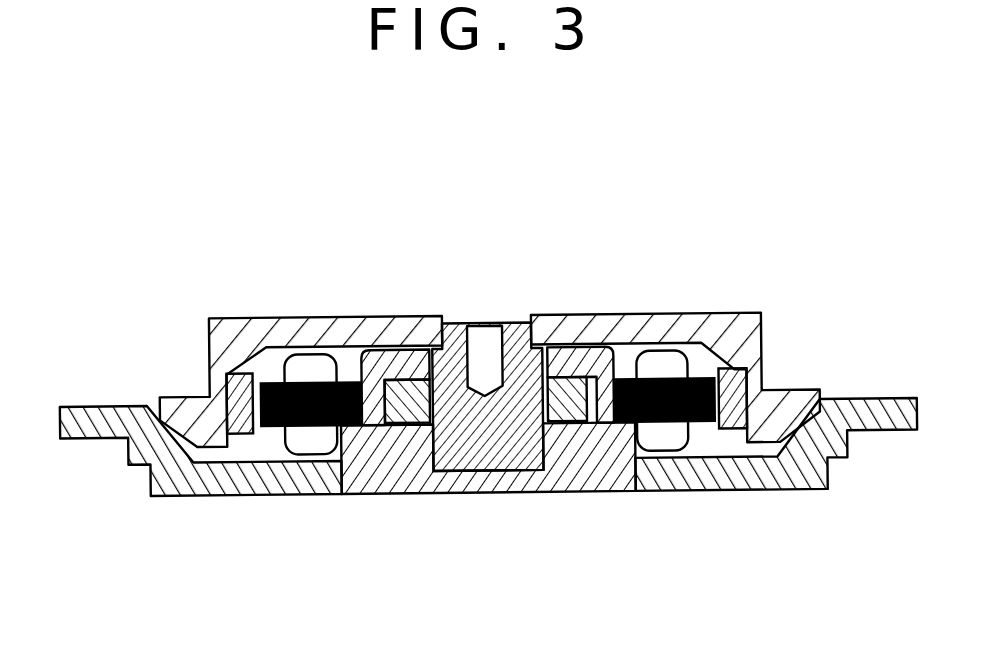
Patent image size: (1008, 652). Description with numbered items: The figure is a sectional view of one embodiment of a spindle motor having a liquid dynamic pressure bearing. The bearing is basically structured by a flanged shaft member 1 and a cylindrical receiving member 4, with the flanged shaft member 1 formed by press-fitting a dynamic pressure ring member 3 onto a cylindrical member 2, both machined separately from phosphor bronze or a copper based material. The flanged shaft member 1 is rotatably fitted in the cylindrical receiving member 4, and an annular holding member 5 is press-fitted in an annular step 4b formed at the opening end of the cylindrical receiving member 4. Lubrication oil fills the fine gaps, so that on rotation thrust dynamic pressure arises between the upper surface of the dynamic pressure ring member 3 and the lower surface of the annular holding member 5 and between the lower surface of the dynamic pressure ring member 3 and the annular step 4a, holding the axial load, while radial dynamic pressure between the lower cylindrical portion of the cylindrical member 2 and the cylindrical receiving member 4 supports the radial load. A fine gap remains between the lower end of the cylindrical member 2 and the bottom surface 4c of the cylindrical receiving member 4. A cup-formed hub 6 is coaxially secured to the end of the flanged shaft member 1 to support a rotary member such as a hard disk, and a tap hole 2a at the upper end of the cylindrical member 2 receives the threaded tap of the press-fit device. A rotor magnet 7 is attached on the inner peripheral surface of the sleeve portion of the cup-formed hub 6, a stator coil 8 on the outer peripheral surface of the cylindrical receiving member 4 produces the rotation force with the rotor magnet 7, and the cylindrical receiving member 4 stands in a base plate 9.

The flanged shaft member 1 is at (485, 427).
The cylindrical member 2 is at (453, 447).
The tap hole 2a is at (492, 347).
The dynamic pressure ring member 3 is at (402, 425).
The cylindrical receiving member 4 is at (600, 380).
The annular step 4a is at (615, 400).
The annular step 4b is at (633, 463).
The bottom surface 4c is at (517, 473).
The annular holding member 5 is at (405, 365).
The cup-formed hub 6 is at (279, 325).
The rotor magnet 7 is at (736, 430).
The stator coil 8 is at (670, 437).
The base plate 9 is at (168, 493).